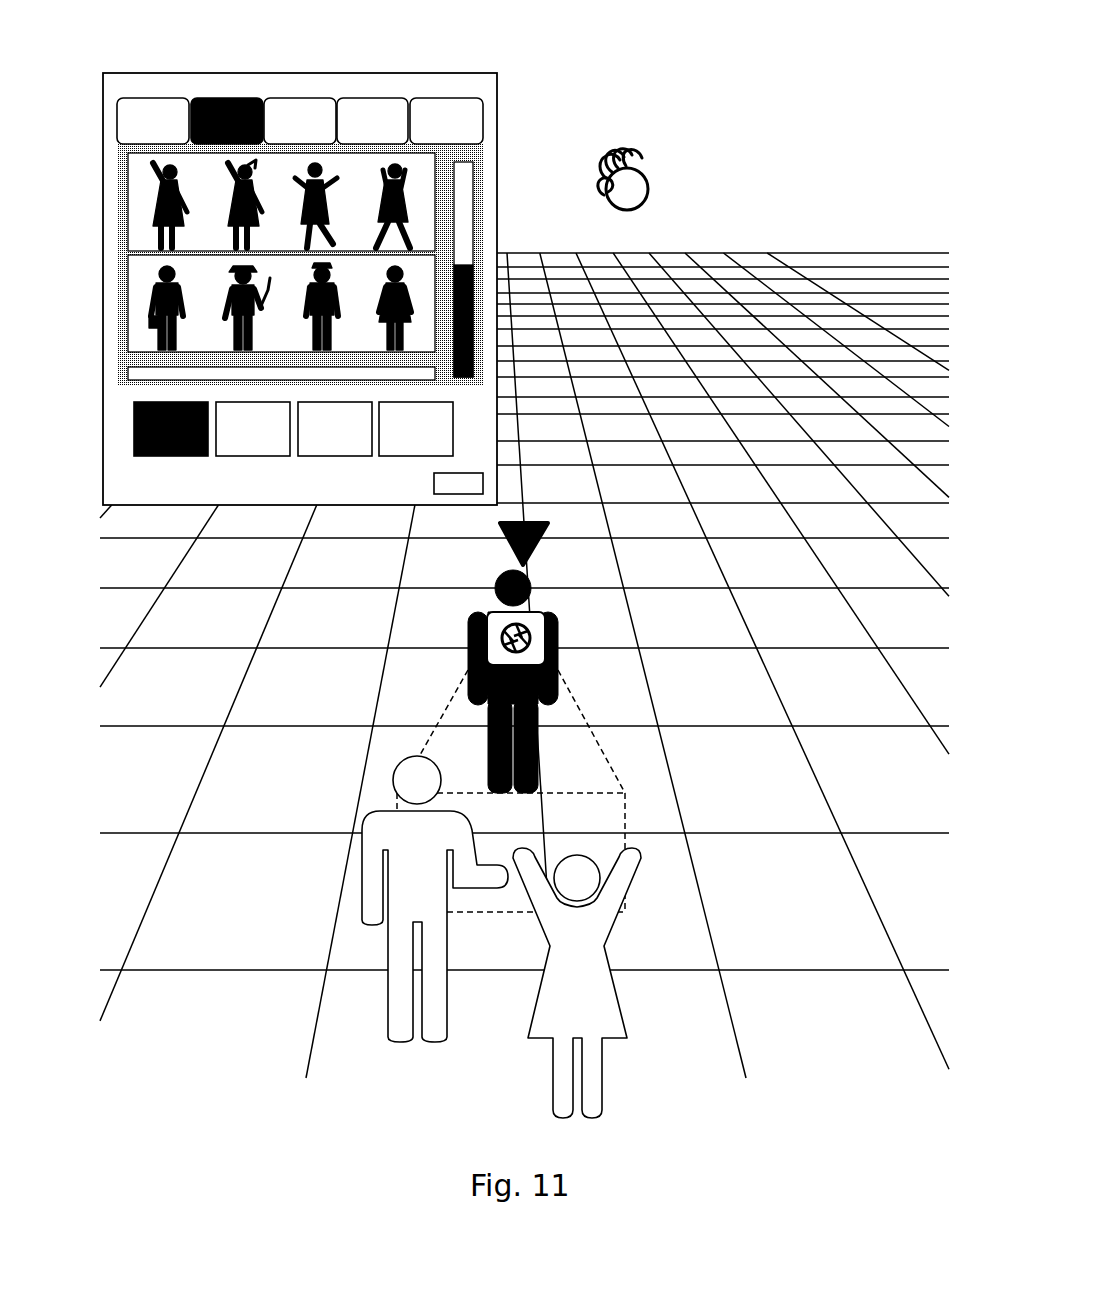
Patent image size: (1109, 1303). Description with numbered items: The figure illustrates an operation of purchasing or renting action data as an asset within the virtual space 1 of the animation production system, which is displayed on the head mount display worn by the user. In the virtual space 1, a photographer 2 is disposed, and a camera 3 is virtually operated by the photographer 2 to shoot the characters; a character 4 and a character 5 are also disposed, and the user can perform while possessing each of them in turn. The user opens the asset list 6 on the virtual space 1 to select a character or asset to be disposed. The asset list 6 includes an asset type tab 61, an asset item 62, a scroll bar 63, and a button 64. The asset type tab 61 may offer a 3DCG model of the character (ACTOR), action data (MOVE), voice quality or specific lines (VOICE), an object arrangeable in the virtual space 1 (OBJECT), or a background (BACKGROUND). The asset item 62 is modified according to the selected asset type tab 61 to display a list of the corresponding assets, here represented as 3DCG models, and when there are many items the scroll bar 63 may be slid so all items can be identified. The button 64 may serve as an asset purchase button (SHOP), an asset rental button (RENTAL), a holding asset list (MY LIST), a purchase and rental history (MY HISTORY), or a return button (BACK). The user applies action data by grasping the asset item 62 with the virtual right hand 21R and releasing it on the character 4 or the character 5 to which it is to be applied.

The virtual space 1 is at (797, 219).
The photographer 2 is at (523, 658).
The camera 3 is at (540, 628).
The character 4 is at (368, 852).
The character 5 is at (600, 936).
The asset list 6 is at (306, 253).
The virtual right hand 21R is at (648, 170).
The asset type tab 61 is at (497, 126).
The asset item 62 is at (133, 203).
The scroll bar 63 is at (476, 206).
The button 64 is at (133, 436).